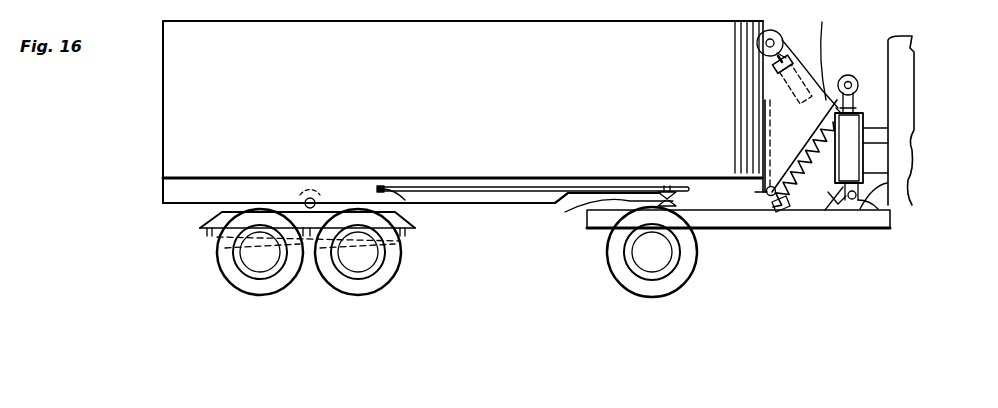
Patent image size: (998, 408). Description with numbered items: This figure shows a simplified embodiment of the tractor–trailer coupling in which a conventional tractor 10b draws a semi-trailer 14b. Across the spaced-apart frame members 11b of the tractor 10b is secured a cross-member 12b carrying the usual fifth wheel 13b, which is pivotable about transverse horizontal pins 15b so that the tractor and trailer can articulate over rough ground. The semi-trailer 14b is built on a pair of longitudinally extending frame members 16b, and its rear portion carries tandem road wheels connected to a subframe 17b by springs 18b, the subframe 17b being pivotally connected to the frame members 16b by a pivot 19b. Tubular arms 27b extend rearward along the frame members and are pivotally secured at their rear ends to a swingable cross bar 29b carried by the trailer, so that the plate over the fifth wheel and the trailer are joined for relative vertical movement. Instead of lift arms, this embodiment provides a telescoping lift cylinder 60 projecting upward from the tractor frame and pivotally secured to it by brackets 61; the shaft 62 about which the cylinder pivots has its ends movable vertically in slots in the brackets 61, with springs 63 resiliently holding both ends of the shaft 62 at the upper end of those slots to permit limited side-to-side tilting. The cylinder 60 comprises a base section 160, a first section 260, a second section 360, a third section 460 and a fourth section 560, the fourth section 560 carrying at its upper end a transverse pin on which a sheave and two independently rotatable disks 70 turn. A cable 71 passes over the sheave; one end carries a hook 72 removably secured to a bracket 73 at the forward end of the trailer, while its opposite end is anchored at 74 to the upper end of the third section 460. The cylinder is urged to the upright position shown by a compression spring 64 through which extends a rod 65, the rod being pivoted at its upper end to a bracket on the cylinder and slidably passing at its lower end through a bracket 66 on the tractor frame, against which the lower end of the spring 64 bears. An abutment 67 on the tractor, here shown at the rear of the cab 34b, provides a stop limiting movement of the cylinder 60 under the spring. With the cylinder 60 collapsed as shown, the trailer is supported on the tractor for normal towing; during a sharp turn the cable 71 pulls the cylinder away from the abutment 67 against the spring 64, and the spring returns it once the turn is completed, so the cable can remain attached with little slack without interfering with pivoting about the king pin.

The semi-trailer 14b is at (158, 148).
The pivot 19b is at (306, 190).
The subframe 17b is at (216, 215).
The springs 18b is at (228, 250).
The arms 27b is at (472, 189).
The cross bar 29b is at (405, 200).
The frame members 16b is at (525, 205).
The fifth wheel 13b is at (610, 217).
The pins 15b is at (666, 190).
The cross-member 12b is at (687, 210).
The frame members 11b is at (718, 224).
The tractor 10b is at (758, 233).
The cab rear wall 34b is at (912, 45).
The compression spring 64 is at (822, 90).
The cable 71 is at (792, 78).
The third section 460 is at (831, 50).
The fourth section 560 is at (837, 105).
The disks 70 is at (851, 76).
The anchor 74 is at (860, 100).
The telescoping lift cylinder 60 is at (866, 129).
The abutment 67 is at (880, 161).
The base section 160 is at (906, 196).
The second section 360 is at (895, 95).
The first section 260 is at (905, 100).
The rod 65 is at (800, 215).
The bracket 66 is at (757, 190).
The hook 72 is at (774, 186).
The bracket 73 is at (760, 191).
The brackets 61 is at (832, 214).
The shaft 62 is at (850, 214).
The springs 63 is at (885, 214).